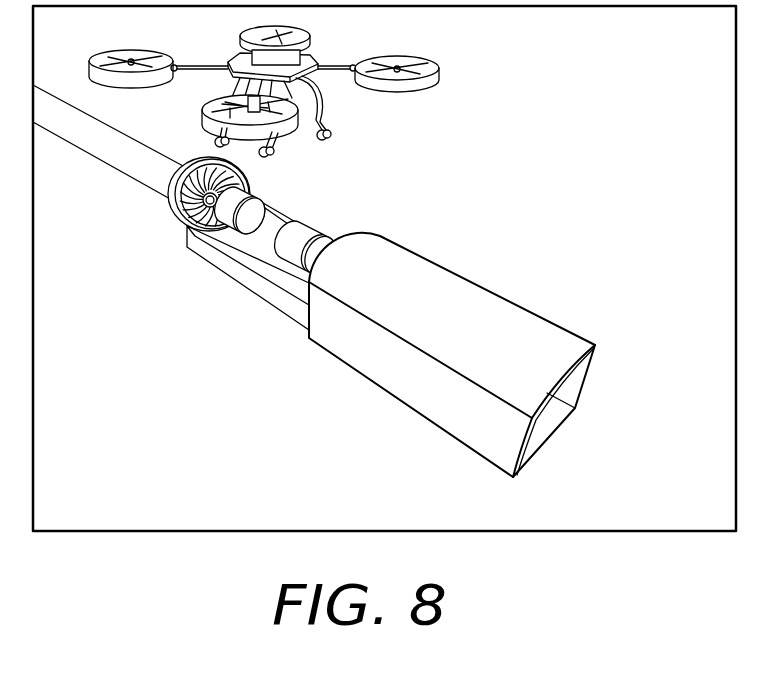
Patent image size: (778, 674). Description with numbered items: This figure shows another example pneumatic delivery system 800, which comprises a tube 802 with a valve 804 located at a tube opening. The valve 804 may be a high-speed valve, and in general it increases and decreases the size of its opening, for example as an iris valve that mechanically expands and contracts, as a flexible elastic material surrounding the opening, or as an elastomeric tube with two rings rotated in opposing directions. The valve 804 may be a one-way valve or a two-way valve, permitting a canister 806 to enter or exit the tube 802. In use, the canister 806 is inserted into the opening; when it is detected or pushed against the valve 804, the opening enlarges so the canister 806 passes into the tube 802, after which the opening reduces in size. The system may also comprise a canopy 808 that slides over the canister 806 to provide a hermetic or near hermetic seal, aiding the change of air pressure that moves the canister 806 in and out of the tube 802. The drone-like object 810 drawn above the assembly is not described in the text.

The pneumatic delivery system 800 is at (350, 281).
The tube 802 is at (110, 153).
The valve 804 is at (172, 210).
The canister 806 is at (270, 238).
The canopy 808 is at (568, 382).
The drone 810 is at (316, 62).